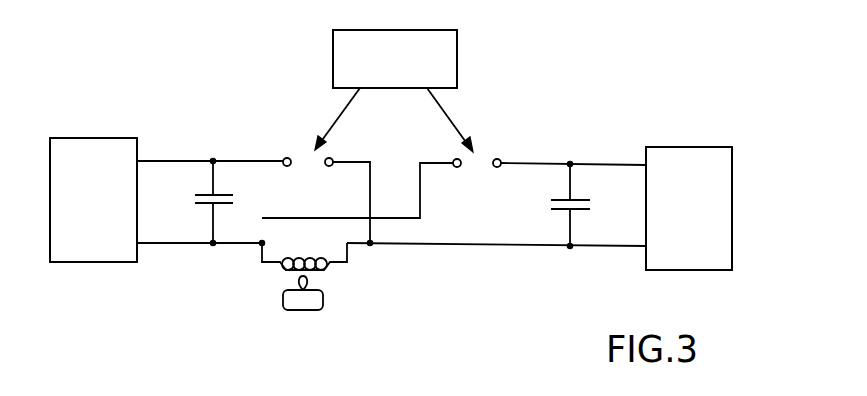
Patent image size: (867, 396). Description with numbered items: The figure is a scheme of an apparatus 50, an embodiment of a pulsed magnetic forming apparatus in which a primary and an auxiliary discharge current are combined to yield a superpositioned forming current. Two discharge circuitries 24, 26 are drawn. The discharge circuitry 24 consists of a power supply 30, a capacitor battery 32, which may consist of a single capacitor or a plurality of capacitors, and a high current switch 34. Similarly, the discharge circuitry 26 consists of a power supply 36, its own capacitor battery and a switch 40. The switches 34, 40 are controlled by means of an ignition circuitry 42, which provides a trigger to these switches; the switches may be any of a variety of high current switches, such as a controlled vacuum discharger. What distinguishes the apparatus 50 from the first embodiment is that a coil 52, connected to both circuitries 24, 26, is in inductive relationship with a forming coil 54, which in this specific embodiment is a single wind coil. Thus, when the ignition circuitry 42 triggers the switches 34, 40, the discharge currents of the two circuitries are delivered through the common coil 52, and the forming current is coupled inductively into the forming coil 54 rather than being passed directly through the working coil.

The power supply 30 is at (97, 142).
The power supply 36 is at (732, 178).
The ignition circuitry 42 is at (457, 67).
The apparatus 50 is at (603, 82).
The discharge circuitry 24 is at (265, 192).
The discharge circuitry 26 is at (477, 209).
The capacitor battery 32 is at (200, 200).
The high current switch 34 is at (305, 163).
The switch 40 is at (478, 165).
The coil 52 is at (280, 268).
The forming coil 54 is at (300, 312).